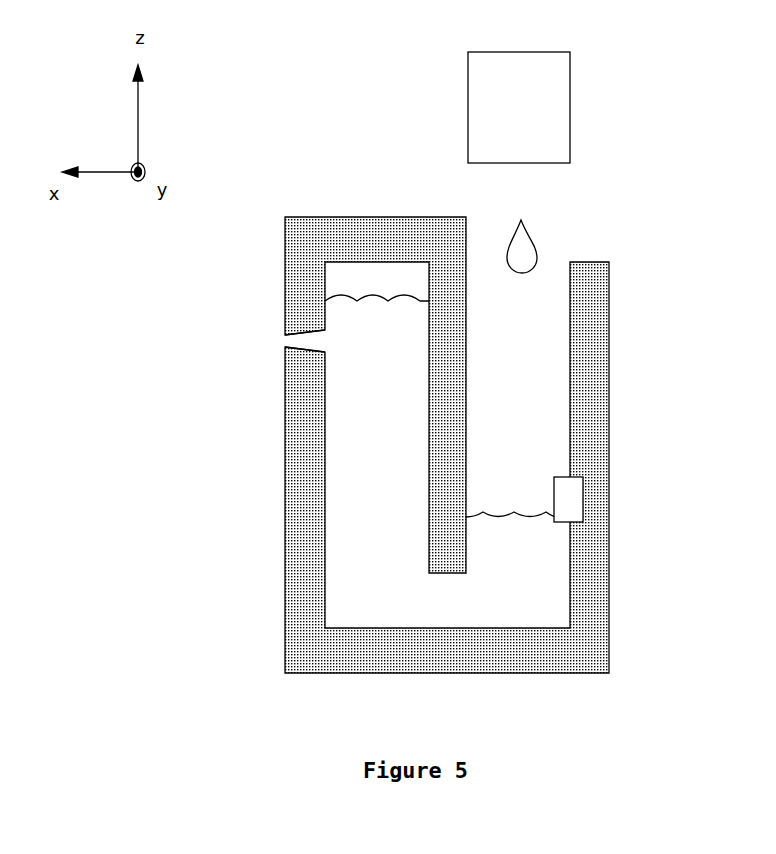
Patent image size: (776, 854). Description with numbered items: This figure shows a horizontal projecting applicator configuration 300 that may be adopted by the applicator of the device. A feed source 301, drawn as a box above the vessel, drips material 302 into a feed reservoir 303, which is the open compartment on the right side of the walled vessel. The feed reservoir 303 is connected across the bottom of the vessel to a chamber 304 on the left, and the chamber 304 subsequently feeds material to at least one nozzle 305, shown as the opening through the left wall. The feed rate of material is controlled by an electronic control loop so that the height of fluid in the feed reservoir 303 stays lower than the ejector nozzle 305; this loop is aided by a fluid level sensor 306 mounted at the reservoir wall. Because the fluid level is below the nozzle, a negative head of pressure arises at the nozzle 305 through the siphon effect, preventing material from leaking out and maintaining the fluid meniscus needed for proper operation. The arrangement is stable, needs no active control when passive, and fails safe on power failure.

The horizontal projecting applicator configuration 300 is at (281, 186).
The feed source 301 is at (570, 115).
The material 302 is at (530, 243).
The feed reservoir 303 is at (530, 392).
The chamber 304 is at (358, 513).
The nozzle 305 is at (282, 340).
The fluid level sensor 306 is at (568, 502).